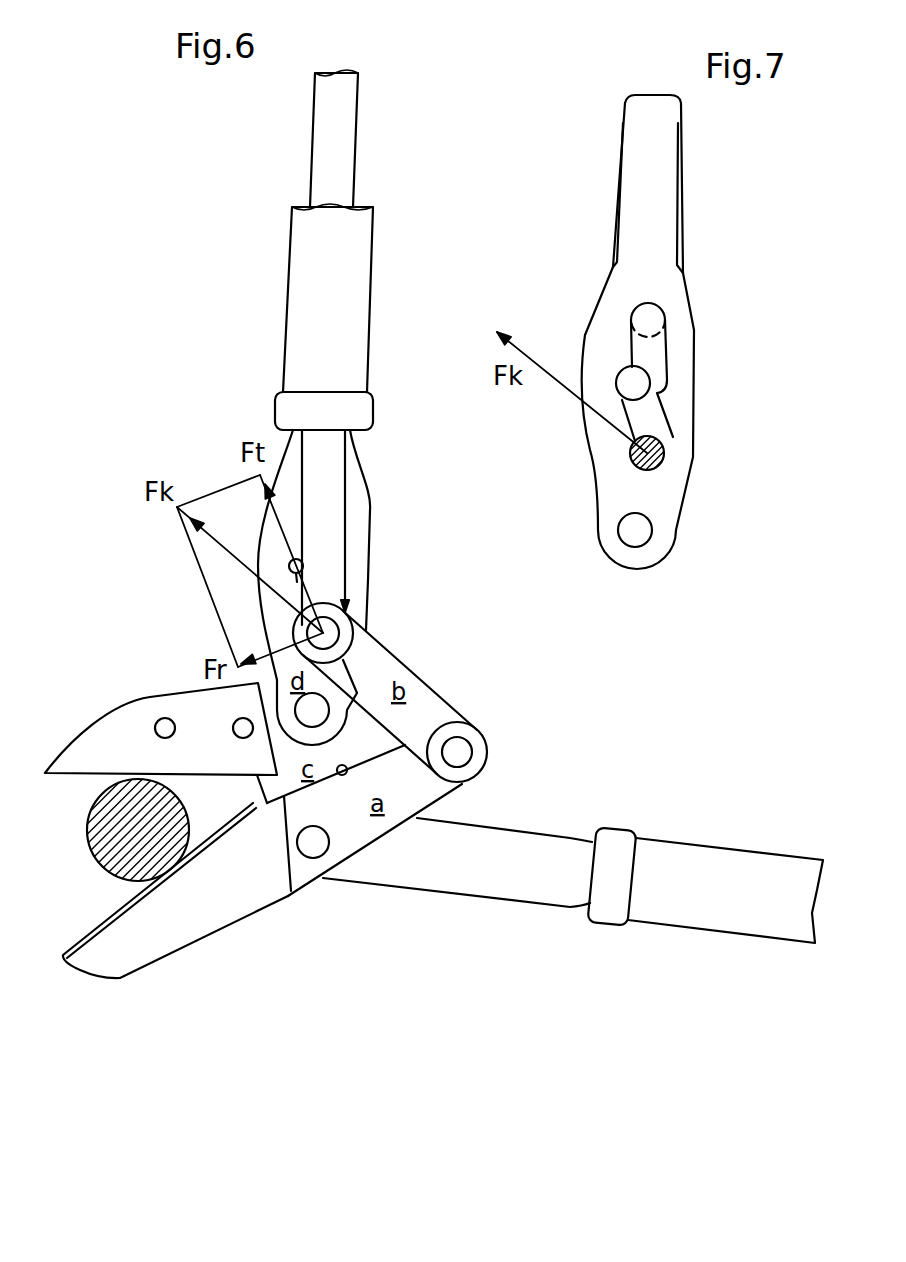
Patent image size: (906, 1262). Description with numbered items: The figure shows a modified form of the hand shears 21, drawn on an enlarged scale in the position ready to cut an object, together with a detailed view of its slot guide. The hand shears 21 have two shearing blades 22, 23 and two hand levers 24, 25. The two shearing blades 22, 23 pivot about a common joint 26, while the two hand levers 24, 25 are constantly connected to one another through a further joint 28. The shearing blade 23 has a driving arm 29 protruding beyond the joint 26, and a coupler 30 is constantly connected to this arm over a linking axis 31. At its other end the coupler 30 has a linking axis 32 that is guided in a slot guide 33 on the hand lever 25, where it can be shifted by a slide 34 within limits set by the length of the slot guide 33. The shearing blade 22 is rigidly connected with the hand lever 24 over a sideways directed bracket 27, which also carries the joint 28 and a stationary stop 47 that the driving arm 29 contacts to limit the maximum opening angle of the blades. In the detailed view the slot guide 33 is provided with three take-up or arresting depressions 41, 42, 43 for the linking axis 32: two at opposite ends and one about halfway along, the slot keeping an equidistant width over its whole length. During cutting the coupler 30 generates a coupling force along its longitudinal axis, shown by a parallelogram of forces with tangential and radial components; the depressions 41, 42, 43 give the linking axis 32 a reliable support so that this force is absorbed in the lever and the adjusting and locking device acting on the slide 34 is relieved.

In FIG. 6, the hand shears 21 is at (117, 994).
In FIG. 6, the shearing blade 22 is at (128, 740).
In FIG. 6, the shearing blade 23 is at (198, 910).
In FIG. 6, the hand lever 24 is at (713, 878).
In FIG. 6, the hand lever 25 is at (345, 275).
In FIG. 7, the hand lever 25 is at (655, 183).
In FIG. 6, the common joint 26 is at (313, 842).
In FIG. 6, the bracket 27 is at (342, 752).
In FIG. 6, the joint 28 is at (315, 703).
In FIG. 7, the joint 28 is at (635, 535).
In FIG. 6, the driving arm 29 is at (403, 792).
In FIG. 6, the coupler 30 is at (432, 700).
In FIG. 6, the linking axis 31 is at (457, 752).
In FIG. 6, the linking axis 32 is at (327, 632).
In FIG. 7, the linking axis 32 is at (665, 453).
In FIG. 6, the slot guide 33 is at (302, 557).
In FIG. 7, the slot guide 33 is at (657, 360).
In FIG. 6, the slide 34 is at (337, 150).
In FIG. 7, the arresting depression 41 is at (633, 468).
In FIG. 7, the arresting depression 42 is at (623, 372).
In FIG. 7, the arresting depression 43 is at (637, 308).
In FIG. 6, the stationary stop 47 is at (342, 777).